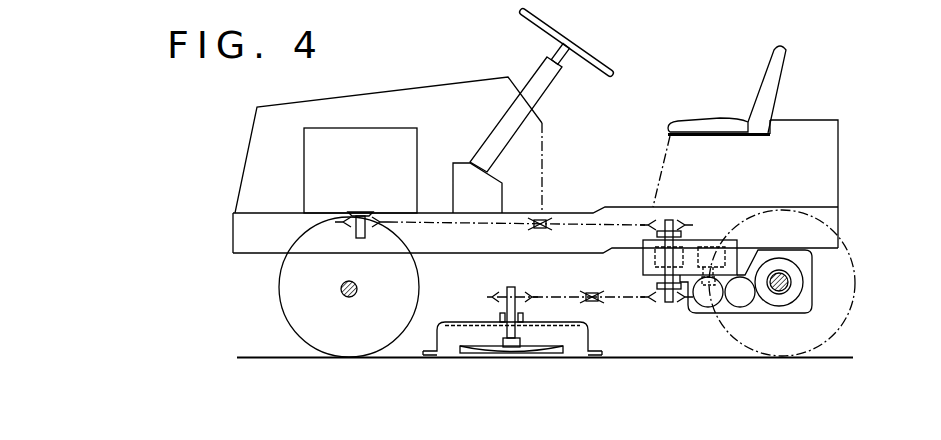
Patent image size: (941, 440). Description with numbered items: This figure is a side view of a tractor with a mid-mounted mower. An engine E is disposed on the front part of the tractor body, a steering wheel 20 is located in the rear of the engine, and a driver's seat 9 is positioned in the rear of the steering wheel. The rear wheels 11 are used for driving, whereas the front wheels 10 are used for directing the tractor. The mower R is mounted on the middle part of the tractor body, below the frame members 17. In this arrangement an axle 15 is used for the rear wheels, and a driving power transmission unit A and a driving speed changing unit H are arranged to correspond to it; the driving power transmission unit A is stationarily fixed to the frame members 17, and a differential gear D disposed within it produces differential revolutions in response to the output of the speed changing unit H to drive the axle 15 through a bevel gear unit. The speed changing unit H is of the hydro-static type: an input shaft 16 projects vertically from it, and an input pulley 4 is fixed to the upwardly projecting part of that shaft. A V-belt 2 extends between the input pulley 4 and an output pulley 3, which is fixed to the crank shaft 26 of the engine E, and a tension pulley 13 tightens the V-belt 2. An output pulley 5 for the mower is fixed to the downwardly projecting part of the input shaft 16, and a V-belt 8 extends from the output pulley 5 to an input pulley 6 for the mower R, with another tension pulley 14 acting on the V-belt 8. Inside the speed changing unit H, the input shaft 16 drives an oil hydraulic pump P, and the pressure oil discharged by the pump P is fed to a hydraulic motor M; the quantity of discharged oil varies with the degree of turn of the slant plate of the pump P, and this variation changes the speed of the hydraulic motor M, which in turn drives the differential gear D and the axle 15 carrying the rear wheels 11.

The V-belt 2 is at (465, 226).
The output pulley 3 is at (353, 223).
The input pulley 4 is at (674, 229).
The output pulley for the mower 5 is at (655, 302).
The input pulley for the mower 6 is at (500, 297).
The V-belt 8 is at (552, 297).
The driver's seat 9 is at (762, 90).
The front wheels 10 is at (285, 312).
The rear wheels 11 is at (845, 325).
The tension pulley 13 is at (537, 213).
The tension pulley 14 is at (597, 303).
The axle 15 is at (790, 283).
The input shaft 16 is at (670, 302).
The frame members 17 is at (593, 213).
The steering wheel 20 is at (612, 74).
The crank shaft 26 is at (367, 226).
The engine E is at (369, 182).
The mower R is at (470, 323).
The driving speed changing unit H is at (643, 264).
The oil hydraulic pump P is at (669, 257).
The hydraulic motor M is at (711, 257).
The differential gear D is at (805, 268).
The driving power transmission unit A is at (765, 310).